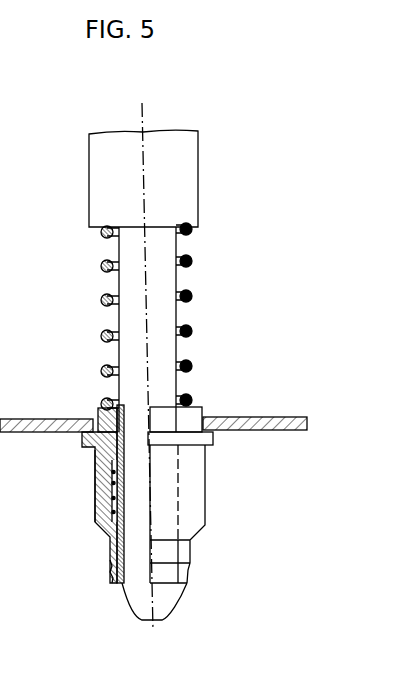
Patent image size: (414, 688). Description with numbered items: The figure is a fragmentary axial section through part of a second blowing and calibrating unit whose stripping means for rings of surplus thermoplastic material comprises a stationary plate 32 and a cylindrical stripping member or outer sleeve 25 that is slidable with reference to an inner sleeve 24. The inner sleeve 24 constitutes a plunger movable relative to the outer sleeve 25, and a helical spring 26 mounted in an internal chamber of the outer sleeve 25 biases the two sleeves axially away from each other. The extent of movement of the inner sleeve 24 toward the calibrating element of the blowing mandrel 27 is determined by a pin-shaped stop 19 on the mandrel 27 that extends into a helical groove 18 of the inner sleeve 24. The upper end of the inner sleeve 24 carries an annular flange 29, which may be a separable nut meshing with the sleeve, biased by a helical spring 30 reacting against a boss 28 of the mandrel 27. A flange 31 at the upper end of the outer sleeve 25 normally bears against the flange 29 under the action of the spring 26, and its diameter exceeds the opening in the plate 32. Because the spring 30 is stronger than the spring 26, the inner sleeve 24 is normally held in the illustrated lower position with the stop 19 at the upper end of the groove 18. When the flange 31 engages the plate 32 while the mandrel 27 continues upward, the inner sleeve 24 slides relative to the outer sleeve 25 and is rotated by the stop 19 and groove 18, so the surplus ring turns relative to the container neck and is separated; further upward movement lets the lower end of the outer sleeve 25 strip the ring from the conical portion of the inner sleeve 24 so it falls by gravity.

The boss 28 is at (188, 178).
The blowing mandrel 27 is at (165, 272).
The helical spring 30 is at (100, 338).
The stationary plate 32 is at (34, 419).
The annular flange 29 is at (192, 420).
The flange 31 is at (198, 439).
The pin-shaped stop 19 is at (110, 460).
The outer sleeve 25 is at (97, 476).
The helical spring 26 is at (110, 498).
The helical groove 18 is at (110, 537).
The inner sleeve 24 is at (110, 553).